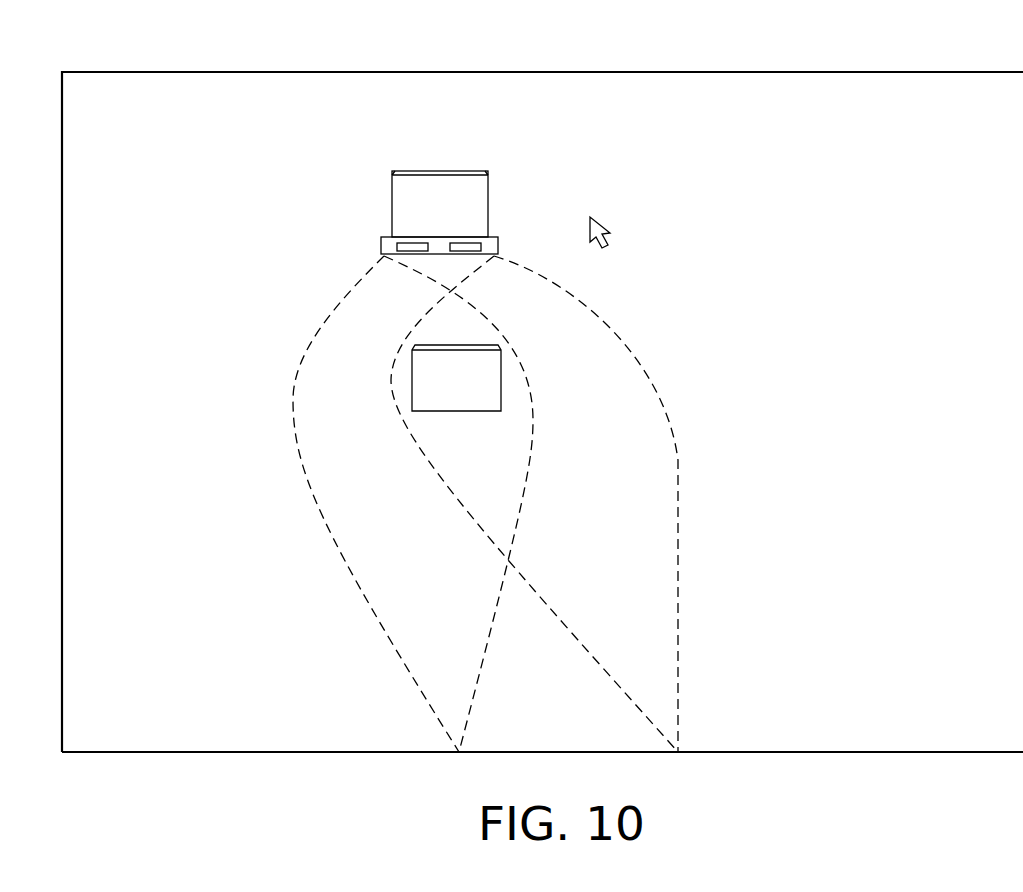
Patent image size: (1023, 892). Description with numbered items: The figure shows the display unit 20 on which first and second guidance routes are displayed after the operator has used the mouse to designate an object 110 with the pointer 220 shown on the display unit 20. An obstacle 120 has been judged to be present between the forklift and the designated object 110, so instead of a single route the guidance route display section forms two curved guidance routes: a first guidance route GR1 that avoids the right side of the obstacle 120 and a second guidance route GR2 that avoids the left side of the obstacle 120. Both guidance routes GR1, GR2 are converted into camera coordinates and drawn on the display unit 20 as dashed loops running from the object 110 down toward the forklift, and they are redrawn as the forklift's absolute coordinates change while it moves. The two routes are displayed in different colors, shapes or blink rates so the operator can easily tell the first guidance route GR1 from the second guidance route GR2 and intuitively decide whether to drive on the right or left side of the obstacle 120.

The display unit 20 is at (725, 72).
The object 110 is at (440, 177).
The obstacle 120 is at (425, 385).
The pointer 220 is at (600, 224).
The first guidance route GR1 is at (645, 362).
The second guidance route GR2 is at (307, 483).